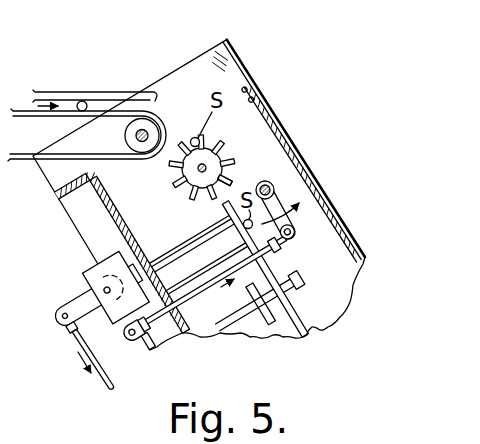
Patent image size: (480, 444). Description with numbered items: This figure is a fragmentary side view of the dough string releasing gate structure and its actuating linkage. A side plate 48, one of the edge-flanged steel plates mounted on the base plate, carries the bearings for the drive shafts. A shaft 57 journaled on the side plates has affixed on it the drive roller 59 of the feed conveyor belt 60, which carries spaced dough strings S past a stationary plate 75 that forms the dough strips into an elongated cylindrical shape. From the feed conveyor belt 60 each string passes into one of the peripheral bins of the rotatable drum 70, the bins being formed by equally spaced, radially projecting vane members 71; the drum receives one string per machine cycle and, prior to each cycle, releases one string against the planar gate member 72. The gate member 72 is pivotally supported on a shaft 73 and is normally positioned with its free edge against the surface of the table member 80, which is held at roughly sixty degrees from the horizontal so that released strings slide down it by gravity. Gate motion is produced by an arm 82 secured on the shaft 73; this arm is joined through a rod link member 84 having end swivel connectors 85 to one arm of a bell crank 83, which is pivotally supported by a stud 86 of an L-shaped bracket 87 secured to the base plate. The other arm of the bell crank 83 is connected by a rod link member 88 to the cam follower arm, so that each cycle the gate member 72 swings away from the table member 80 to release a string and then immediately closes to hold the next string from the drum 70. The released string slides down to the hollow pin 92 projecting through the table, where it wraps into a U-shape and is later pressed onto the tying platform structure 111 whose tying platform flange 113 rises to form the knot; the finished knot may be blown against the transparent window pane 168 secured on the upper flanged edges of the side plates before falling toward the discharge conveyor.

The side plate 48 is at (197, 62).
The stationary plate 75 is at (115, 97).
The drive roller 59 is at (152, 127).
The shaft 57 is at (136, 137).
The feed conveyor belt 60 is at (14, 160).
The rotatable drum 70 is at (217, 146).
The vane member 71 is at (232, 153).
The transparent window pane 168 is at (280, 122).
The shaft 73 is at (262, 162).
The arm 82 is at (276, 202).
The end swivel connector 85 is at (292, 244).
The planar gate member 72 is at (276, 252).
The hollow pin 92 is at (296, 289).
The table member 80 is at (323, 328).
The L-shaped bracket 87 is at (93, 270).
The stud 86 is at (104, 290).
The rod link member 84 is at (217, 278).
The bell crank 83 is at (88, 308).
The rod link member 88 is at (101, 389).
The tying platform structure 111 is at (236, 346).
The tying platform flange 113 is at (272, 340).